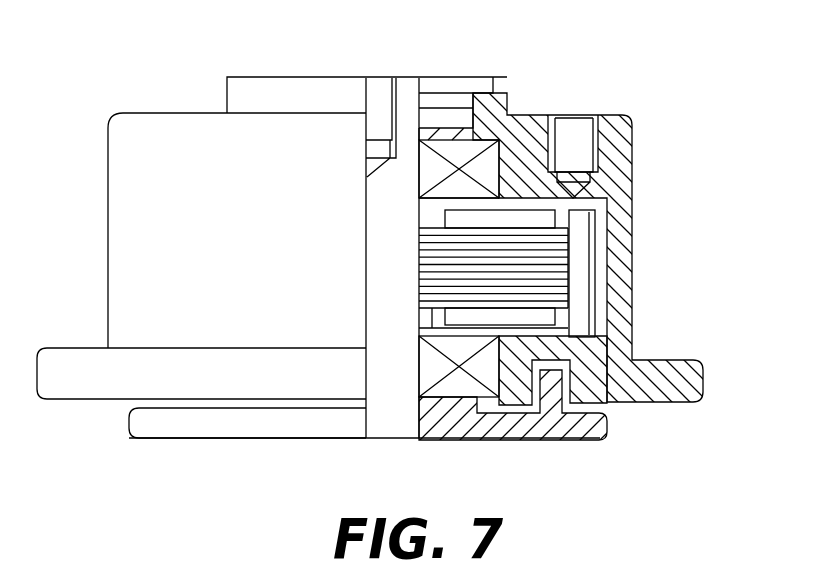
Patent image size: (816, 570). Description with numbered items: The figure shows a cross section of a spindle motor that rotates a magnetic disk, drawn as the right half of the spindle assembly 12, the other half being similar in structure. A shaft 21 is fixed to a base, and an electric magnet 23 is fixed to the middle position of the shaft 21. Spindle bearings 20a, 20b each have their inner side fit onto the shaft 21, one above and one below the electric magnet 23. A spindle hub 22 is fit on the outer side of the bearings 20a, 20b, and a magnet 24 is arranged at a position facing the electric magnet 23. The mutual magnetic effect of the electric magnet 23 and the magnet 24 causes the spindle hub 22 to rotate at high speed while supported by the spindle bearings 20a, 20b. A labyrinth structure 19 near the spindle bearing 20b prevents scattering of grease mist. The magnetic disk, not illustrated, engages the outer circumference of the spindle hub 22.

The spindle assembly 12 is at (323, 71).
The labyrinth structure 19 is at (612, 413).
The spindle bearing 20a is at (430, 170).
The spindle bearing 20b is at (465, 385).
The shaft 21 is at (385, 300).
The spindle hub 22 is at (628, 133).
The electric magnet 23 is at (571, 232).
The magnet 24 is at (580, 296).